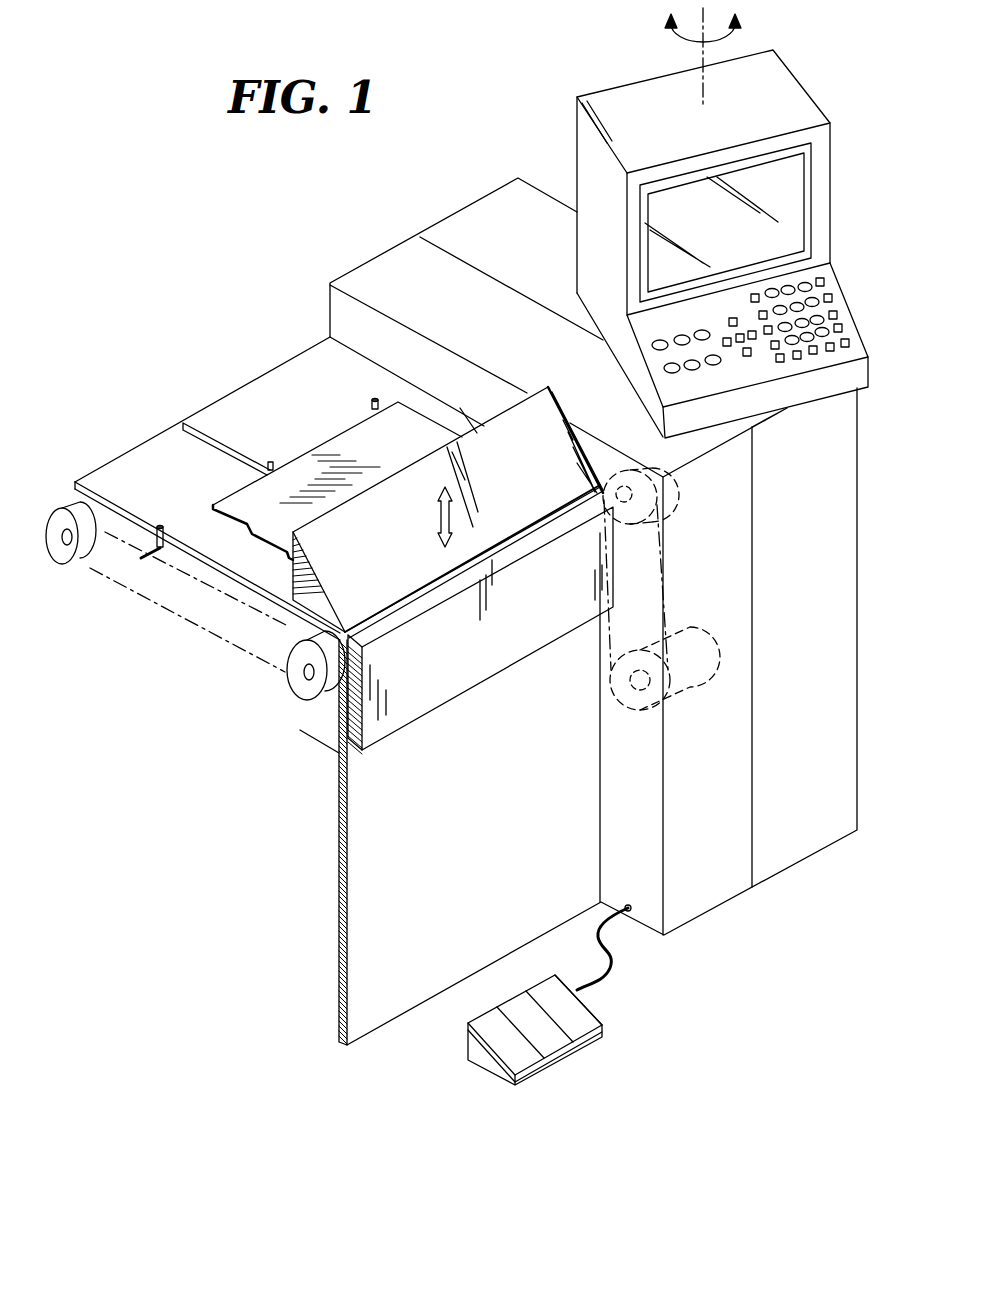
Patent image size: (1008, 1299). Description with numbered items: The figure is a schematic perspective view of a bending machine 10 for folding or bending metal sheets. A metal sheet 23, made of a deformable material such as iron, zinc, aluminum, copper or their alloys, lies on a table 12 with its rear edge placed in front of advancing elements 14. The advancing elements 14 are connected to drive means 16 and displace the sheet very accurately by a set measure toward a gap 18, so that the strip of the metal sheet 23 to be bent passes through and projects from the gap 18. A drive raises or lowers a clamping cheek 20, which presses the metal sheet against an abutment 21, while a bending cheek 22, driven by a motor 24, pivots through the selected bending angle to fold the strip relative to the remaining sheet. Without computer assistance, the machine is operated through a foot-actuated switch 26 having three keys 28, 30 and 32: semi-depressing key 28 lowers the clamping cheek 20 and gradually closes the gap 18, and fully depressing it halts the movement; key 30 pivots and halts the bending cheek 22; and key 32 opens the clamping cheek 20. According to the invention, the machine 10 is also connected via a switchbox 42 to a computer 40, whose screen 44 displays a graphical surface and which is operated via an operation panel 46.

The bending machine 10 is at (210, 352).
The table 12 is at (123, 477).
The advancing elements 14 is at (160, 527).
The drive means 16 is at (112, 595).
The gap 18 is at (283, 590).
The clamping cheek 20 is at (510, 433).
The abutment 21 is at (283, 628).
The bending cheek 22 is at (423, 682).
The metal sheet 23 is at (355, 447).
The motor 24 is at (695, 705).
The foot-actuated switch 26 is at (533, 1022).
The key 28 is at (517, 1053).
The key 30 is at (547, 1038).
The key 32 is at (577, 1017).
The computer 40 is at (592, 158).
The switchbox 42 is at (830, 540).
The screen 44 is at (786, 167).
The operation panel 46 is at (840, 283).